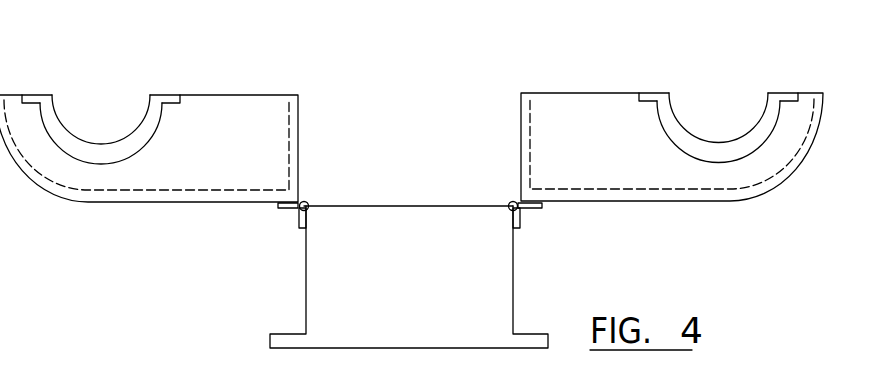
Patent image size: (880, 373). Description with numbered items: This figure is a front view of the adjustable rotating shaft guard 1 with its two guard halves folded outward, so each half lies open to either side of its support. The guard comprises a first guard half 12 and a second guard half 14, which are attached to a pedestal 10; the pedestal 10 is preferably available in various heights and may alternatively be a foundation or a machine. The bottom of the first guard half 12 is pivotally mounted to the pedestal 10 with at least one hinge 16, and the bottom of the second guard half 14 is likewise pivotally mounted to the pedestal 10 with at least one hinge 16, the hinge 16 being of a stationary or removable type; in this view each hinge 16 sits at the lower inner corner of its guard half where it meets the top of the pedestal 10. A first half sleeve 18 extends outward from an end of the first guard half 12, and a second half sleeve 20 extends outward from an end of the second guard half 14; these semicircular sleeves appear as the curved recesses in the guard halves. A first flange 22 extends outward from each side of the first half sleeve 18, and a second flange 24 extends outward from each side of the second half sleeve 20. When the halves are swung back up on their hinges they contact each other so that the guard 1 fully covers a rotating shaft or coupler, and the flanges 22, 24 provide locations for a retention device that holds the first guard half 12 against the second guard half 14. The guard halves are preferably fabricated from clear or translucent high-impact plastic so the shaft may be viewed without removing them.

The adjustable rotating shaft guard 1 is at (105, 265).
The pedestal 10 is at (306, 297).
The first guard half 12 is at (263, 93).
The second guard half 14 is at (555, 93).
The hinge 16 is at (278, 207).
The first half sleeve 18 is at (143, 120).
The second half sleeve 20 is at (688, 127).
The first flange 22 is at (28, 95).
The second flange 24 is at (655, 93).